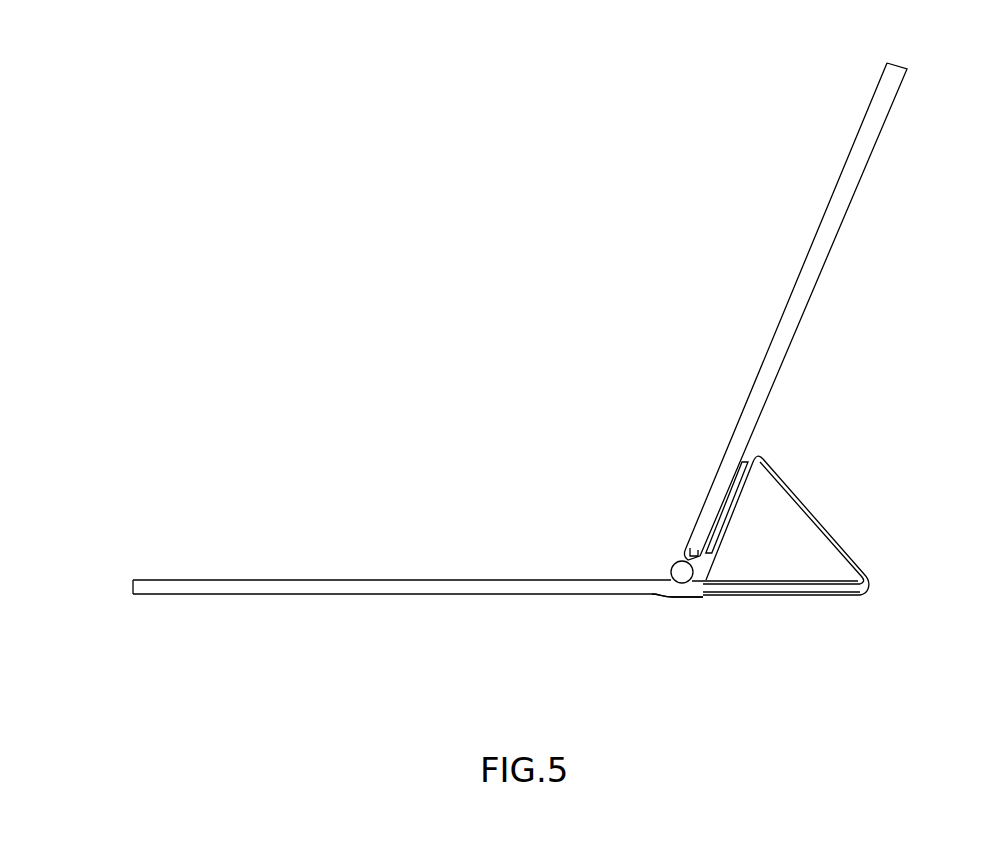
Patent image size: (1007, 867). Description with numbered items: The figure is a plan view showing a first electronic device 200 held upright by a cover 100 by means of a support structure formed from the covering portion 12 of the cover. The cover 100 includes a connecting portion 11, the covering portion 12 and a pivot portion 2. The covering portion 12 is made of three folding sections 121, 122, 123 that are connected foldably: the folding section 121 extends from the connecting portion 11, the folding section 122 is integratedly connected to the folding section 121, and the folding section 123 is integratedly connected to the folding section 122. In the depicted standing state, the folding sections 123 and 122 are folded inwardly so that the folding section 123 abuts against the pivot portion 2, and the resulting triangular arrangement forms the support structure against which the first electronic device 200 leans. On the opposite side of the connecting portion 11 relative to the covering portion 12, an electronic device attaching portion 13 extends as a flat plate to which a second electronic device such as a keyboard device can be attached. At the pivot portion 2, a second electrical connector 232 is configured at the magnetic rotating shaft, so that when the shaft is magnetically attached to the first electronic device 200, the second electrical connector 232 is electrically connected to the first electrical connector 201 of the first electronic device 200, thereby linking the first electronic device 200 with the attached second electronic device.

The cover 100 is at (486, 523).
The first electronic device 200 is at (857, 158).
The electronic device attaching portion 13 is at (270, 579).
The connecting portion 11 is at (673, 605).
The covering portion 12 is at (836, 543).
The folding section 121 is at (792, 606).
The folding section 122 is at (856, 532).
The folding section 123 is at (746, 519).
The pivot portion 2 is at (664, 550).
The first electrical connector 201 is at (684, 549).
The second electrical connector 232 is at (671, 569).